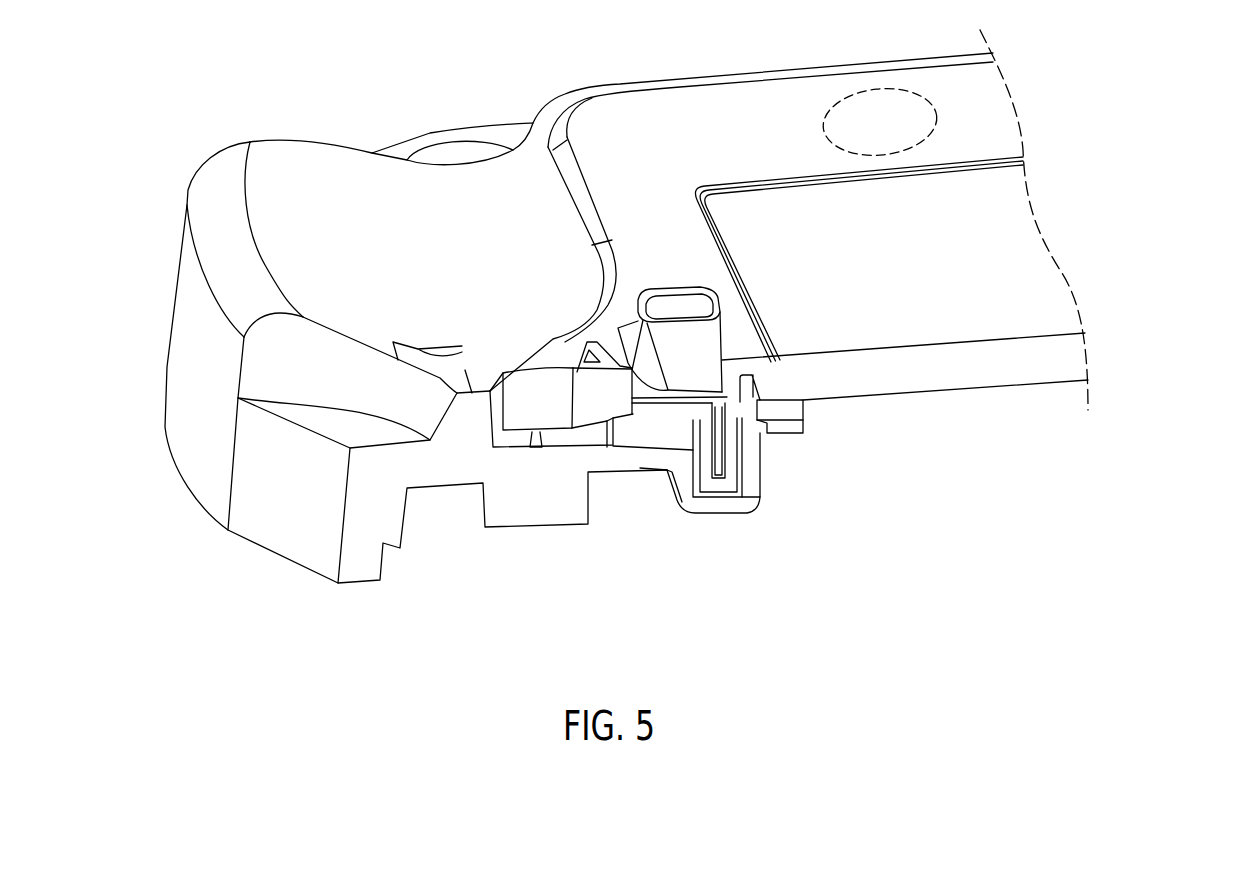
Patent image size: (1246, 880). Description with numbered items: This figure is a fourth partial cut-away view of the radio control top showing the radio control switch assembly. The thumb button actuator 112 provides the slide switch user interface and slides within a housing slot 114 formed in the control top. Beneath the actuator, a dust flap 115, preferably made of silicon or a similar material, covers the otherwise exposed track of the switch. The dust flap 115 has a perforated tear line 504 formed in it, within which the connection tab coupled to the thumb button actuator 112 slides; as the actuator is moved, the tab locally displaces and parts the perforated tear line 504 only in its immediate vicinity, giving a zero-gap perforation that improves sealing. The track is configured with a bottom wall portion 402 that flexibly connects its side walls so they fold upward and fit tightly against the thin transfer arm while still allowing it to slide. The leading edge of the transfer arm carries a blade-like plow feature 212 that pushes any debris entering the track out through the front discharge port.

The thumb button actuator 112 is at (676, 286).
The housing slot 114 is at (675, 485).
The dust flap 115 is at (647, 437).
The plow feature 212 is at (722, 455).
The bottom wall portion 402 is at (722, 487).
The perforated tear line 504 is at (727, 407).